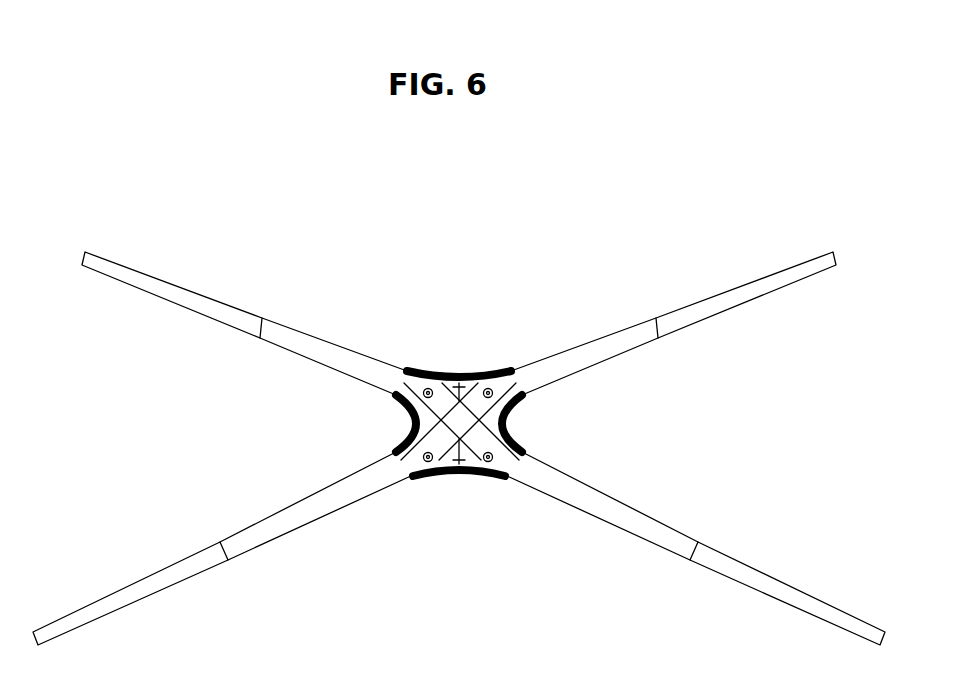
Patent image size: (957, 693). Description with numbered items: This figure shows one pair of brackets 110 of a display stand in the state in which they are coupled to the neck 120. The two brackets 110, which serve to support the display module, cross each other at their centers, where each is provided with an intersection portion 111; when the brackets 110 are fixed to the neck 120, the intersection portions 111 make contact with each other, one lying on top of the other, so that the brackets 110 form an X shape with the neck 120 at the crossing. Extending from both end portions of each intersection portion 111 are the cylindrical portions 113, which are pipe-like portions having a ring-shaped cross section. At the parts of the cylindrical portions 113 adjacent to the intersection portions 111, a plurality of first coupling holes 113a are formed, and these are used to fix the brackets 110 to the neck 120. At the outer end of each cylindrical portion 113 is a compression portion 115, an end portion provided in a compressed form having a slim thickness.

The brackets 110 is at (445, 303).
The intersection portion 111 is at (447, 370).
The cylindrical portion 113 is at (317, 343).
The first coupling hole 113a is at (400, 406).
The compression portion 115 is at (227, 307).
The neck 120 is at (485, 362).